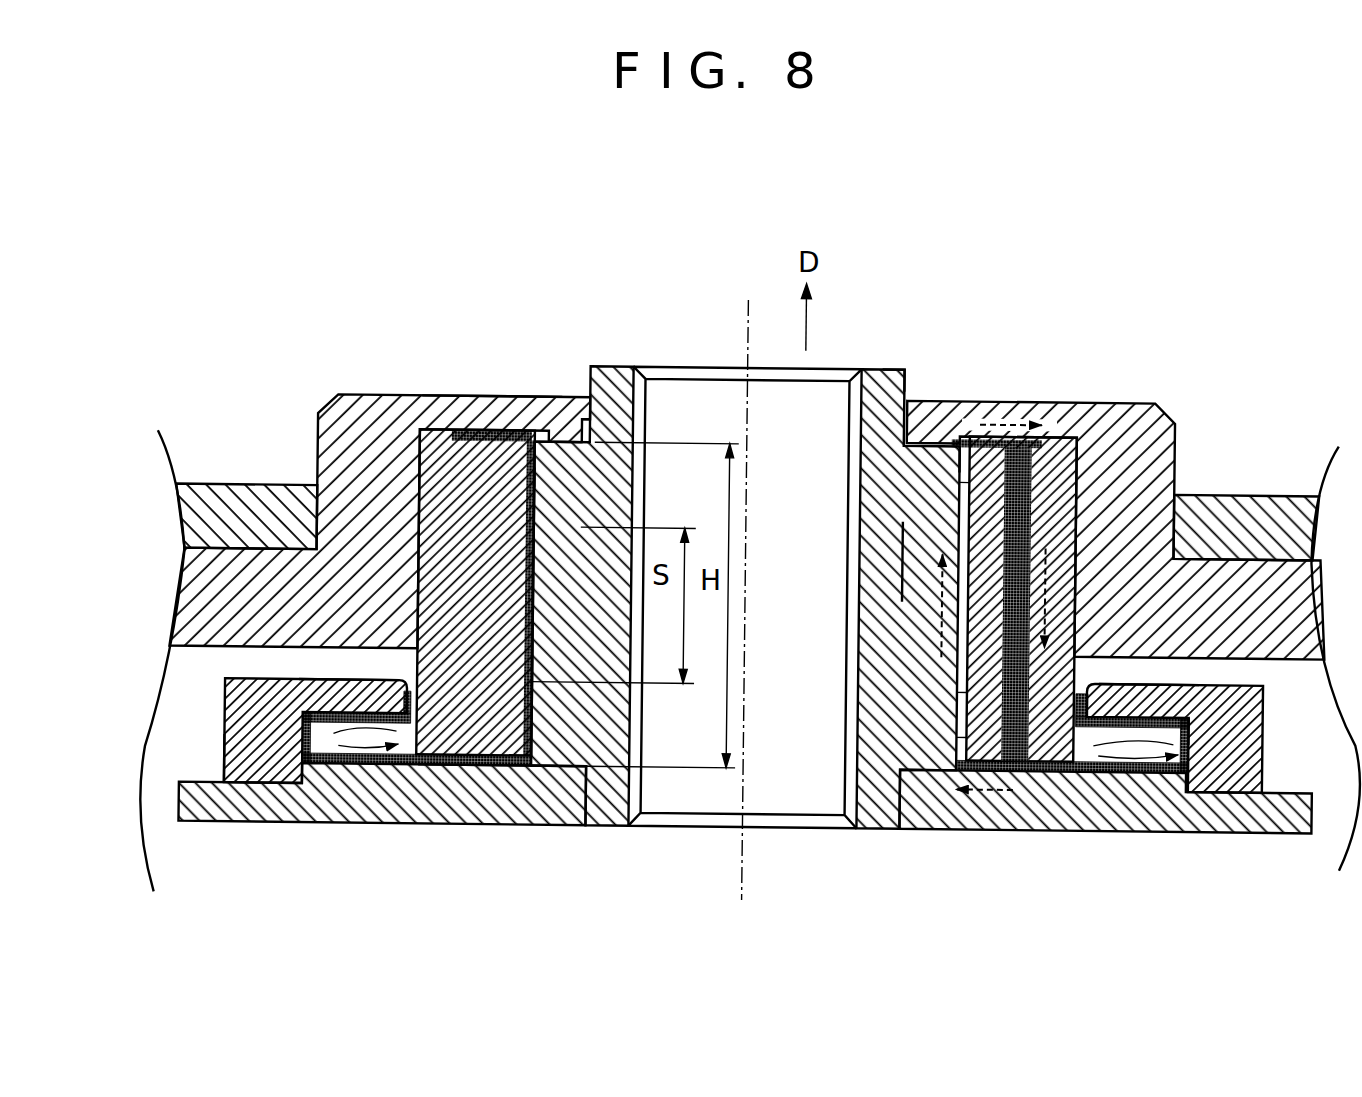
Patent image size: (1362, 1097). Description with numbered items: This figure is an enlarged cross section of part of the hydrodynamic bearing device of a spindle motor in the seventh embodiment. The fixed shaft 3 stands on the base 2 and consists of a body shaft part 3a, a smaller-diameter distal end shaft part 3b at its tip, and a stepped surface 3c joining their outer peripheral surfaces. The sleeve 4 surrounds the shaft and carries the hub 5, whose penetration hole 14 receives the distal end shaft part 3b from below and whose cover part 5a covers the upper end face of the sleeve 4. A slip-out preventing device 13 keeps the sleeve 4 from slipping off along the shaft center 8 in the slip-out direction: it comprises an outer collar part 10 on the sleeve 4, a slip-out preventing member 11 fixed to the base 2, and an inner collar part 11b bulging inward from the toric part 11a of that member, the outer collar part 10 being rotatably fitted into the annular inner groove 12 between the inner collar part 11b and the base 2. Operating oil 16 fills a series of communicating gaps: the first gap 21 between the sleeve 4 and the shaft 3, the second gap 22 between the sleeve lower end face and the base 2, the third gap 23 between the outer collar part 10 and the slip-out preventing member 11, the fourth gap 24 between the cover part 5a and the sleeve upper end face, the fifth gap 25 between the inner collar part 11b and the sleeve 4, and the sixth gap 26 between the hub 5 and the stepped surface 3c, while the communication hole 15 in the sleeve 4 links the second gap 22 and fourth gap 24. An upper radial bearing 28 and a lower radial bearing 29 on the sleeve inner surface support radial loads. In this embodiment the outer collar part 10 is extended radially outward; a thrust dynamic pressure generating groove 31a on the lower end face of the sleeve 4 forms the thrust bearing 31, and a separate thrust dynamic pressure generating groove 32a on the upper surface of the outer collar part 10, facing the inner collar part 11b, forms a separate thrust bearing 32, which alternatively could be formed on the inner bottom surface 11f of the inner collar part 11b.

The base 2 is at (527, 828).
The fixed shaft 3 is at (610, 375).
The body shaft part 3a is at (885, 558).
The distal end shaft part 3b is at (888, 375).
The stepped surface 3c is at (537, 430).
The sleeve 4 is at (410, 515).
The hub 5 is at (1172, 412).
The cover part 5a is at (485, 395).
The shaft center 8 is at (746, 378).
The outer collar part 10 is at (302, 745).
The slip-out preventing member 11 is at (222, 712).
The toric part 11a is at (237, 752).
The inner collar part 11b is at (310, 688).
The inner bottom surface 11f is at (462, 775).
The inner groove 12 is at (1182, 773).
The slip-out preventing device 13 is at (392, 668).
The penetration hole 14 is at (582, 412).
The communication hole 15 is at (1040, 470).
The operating oil 16 is at (533, 477).
The first gap 21 is at (952, 690).
The second gap 22 is at (1050, 773).
The third gap 23 is at (1183, 720).
The fourth gap 24 is at (985, 432).
The fifth gap 25 is at (1093, 697).
The sixth gap 26 is at (925, 437).
The upper radial bearing 28 is at (955, 485).
The lower radial bearing 29 is at (952, 735).
The thrust bearing 31 is at (396, 750).
The thrust dynamic pressure generating groove 31a is at (1087, 773).
The separate thrust bearing 32 is at (338, 727).
The separate thrust dynamic pressure generating groove 32a is at (1157, 773).